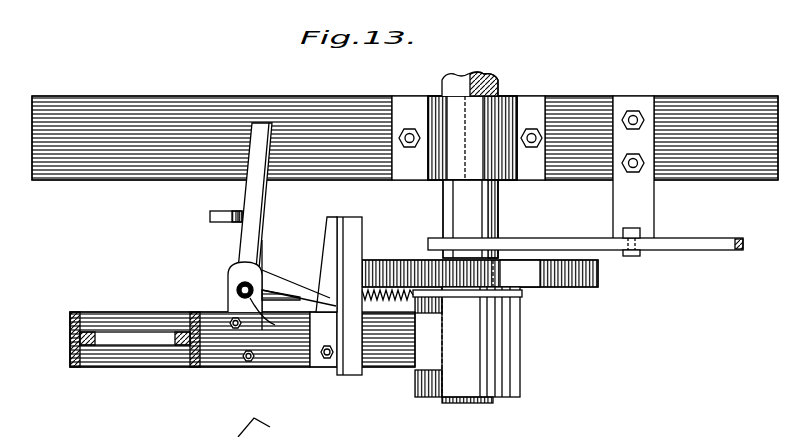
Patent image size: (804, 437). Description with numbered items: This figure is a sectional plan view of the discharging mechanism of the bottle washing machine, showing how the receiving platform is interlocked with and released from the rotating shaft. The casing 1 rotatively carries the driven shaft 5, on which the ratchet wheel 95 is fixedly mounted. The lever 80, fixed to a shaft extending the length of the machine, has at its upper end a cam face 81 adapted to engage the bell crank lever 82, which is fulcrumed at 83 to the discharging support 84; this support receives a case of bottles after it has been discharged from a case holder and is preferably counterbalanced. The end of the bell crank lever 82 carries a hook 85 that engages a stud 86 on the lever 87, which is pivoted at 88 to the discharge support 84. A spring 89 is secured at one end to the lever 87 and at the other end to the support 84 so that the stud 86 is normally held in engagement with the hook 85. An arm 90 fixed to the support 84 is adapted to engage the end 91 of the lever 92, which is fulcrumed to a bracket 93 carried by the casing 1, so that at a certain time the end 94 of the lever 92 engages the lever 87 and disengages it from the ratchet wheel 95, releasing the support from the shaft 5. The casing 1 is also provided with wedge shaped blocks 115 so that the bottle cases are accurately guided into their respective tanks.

The casing 1 is at (688, 93).
The driven shaft 5 is at (498, 84).
The lever 80 is at (210, 216).
The cam face 81 is at (238, 222).
The bell crank lever 82 is at (255, 192).
The fulcrum 83 is at (236, 289).
The discharging support 84 is at (297, 353).
The hook 85 is at (351, 370).
The stud 86 is at (327, 297).
The lever 87 is at (330, 236).
The pivot 88 is at (328, 362).
The spring 89 is at (403, 300).
The arm 90 is at (355, 253).
The end of lever 91 is at (737, 251).
The lever 92 is at (668, 248).
The bracket 93 is at (633, 168).
The end of lever 94 is at (468, 243).
The ratchet wheel 95 is at (553, 287).
The wedge shaped blocks 115 is at (252, 306).